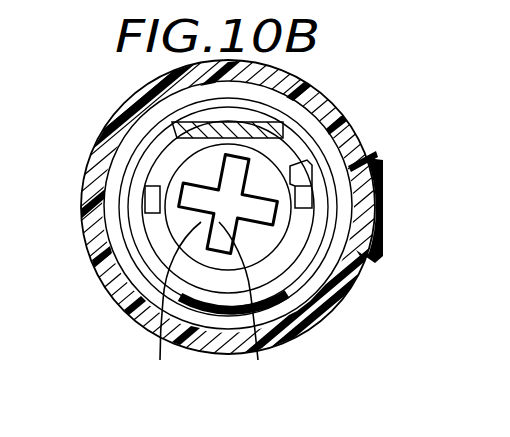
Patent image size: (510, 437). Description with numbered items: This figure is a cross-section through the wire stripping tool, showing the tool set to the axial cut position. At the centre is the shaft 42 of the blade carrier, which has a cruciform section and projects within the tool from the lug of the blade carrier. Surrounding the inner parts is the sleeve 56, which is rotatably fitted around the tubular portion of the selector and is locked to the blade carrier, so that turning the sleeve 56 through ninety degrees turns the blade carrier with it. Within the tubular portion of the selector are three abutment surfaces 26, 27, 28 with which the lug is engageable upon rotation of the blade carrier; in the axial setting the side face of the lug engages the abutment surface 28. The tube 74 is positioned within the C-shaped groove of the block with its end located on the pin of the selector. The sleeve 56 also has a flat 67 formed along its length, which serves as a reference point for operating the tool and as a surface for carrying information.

The abutment surface 26 is at (305, 248).
The abutment surface 27 is at (303, 188).
The abutment surface 28 is at (147, 200).
The shaft 42 is at (277, 347).
The sleeve 56 is at (230, 343).
The flat 67 is at (383, 236).
The tube 74 is at (165, 338).